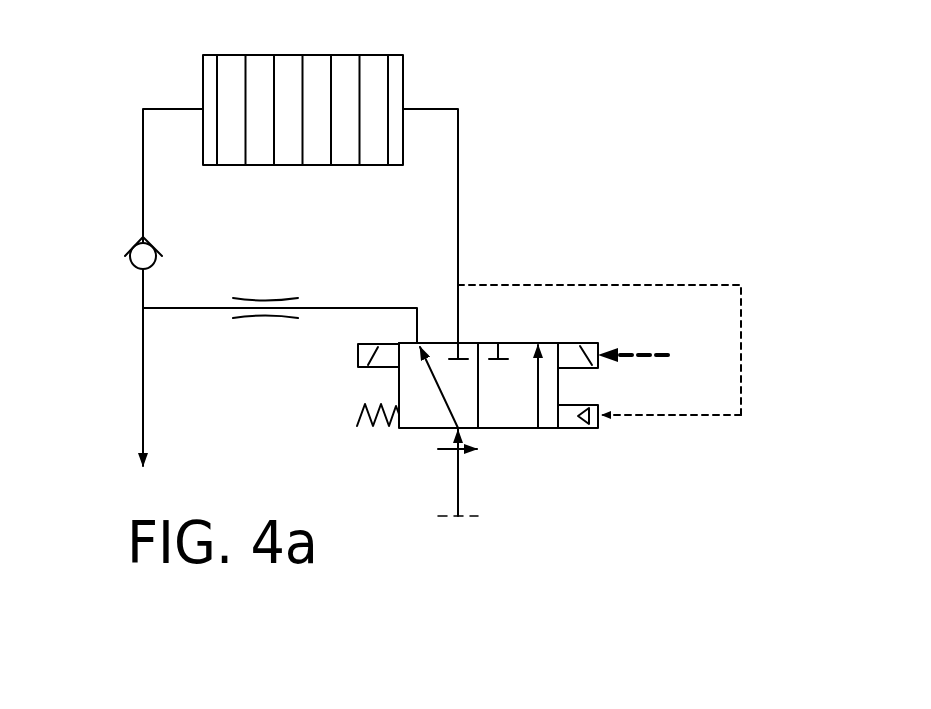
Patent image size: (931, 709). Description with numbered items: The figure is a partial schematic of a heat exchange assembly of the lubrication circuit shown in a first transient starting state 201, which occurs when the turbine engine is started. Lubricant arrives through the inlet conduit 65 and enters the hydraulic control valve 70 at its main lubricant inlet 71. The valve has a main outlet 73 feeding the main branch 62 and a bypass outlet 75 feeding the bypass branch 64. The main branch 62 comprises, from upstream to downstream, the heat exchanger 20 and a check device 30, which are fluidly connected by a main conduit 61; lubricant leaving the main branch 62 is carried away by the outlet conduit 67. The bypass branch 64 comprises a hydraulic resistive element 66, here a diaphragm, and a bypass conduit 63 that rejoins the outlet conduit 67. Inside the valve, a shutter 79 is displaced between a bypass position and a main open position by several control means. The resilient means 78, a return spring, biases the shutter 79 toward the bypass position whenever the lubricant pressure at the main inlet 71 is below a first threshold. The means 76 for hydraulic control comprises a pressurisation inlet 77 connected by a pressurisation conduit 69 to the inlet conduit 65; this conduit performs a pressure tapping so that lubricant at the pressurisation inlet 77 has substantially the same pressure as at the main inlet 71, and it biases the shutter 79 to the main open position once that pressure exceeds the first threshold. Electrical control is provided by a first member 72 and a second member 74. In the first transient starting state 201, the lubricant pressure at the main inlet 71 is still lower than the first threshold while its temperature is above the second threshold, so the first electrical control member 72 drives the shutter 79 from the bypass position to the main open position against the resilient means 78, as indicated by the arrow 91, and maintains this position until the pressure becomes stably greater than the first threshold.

The first transient starting state 201 is at (707, 83).
The heat exchanger 20 is at (395, 70).
The main branch 62 is at (123, 203).
The check device 30 is at (138, 252).
The main conduit 61 is at (143, 288).
The outlet conduit 67 is at (143, 410).
The bypass conduit 63 is at (180, 307).
The hydraulic resistive element 66 is at (272, 300).
The bypass branch 64 is at (218, 344).
The main outlet 73 is at (455, 342).
The hydraulic control valve 70 is at (527, 333).
The shutter 79 is at (442, 397).
The bypass outlet 75 is at (417, 343).
The first member for electrically controlling the shutter 72 is at (358, 362).
The resilient means for biasing the shutter 78 is at (357, 421).
The second member for electrically controlling the shutter 74 is at (592, 361).
The means for hydraulic control of the shutter 76 is at (573, 422).
The pressurisation inlet 77 is at (603, 418).
The pressurisation conduit 69 is at (741, 358).
The arrow 91 is at (648, 352).
The inlet conduit 65 is at (459, 494).
The main lubricant inlet 71 is at (462, 432).